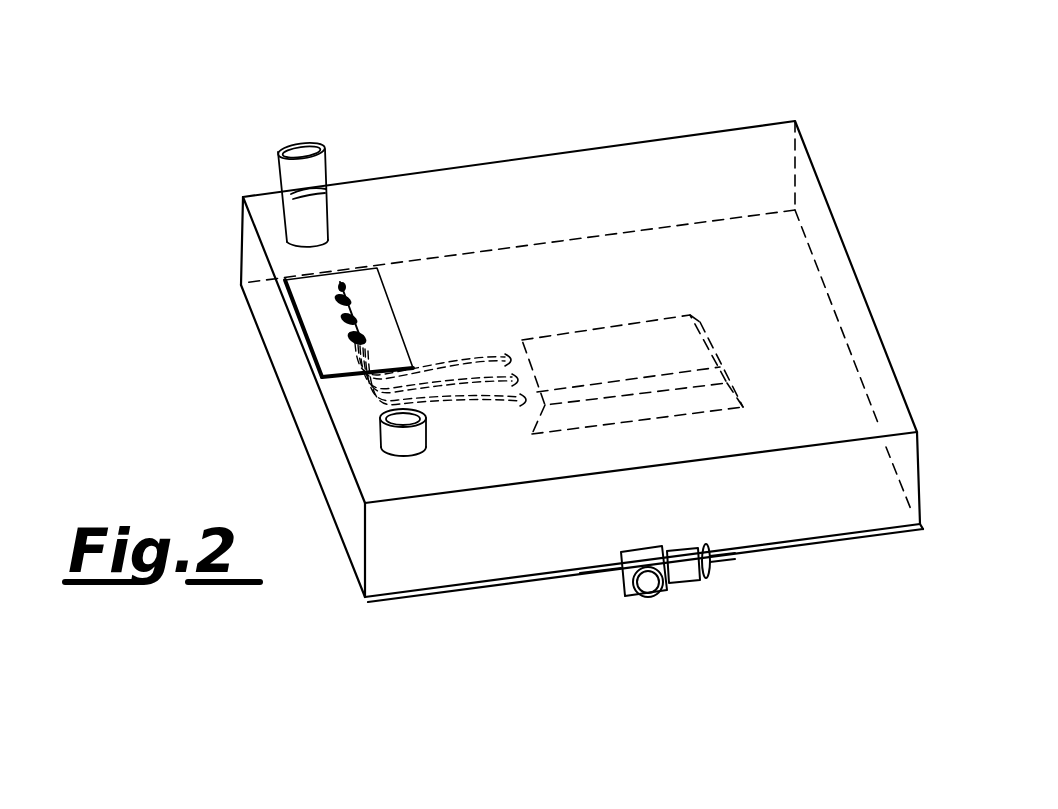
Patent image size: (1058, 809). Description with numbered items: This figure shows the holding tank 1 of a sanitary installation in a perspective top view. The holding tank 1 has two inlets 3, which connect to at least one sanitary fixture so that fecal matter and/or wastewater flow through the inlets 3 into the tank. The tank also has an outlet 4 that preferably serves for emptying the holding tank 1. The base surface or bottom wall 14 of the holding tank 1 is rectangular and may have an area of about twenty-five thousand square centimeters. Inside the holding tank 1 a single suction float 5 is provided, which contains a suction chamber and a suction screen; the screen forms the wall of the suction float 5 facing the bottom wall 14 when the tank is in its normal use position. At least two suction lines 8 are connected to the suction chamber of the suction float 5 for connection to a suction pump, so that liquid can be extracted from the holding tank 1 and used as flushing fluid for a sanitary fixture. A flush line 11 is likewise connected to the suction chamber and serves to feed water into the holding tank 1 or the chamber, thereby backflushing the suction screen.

The holding tank 1 is at (702, 108).
The inlets 3 is at (320, 126).
The outlet 4 is at (650, 620).
The suction float 5 is at (632, 292).
The suction lines 8 is at (484, 358).
The flush line 11 is at (462, 378).
The bottom wall 14 is at (795, 252).